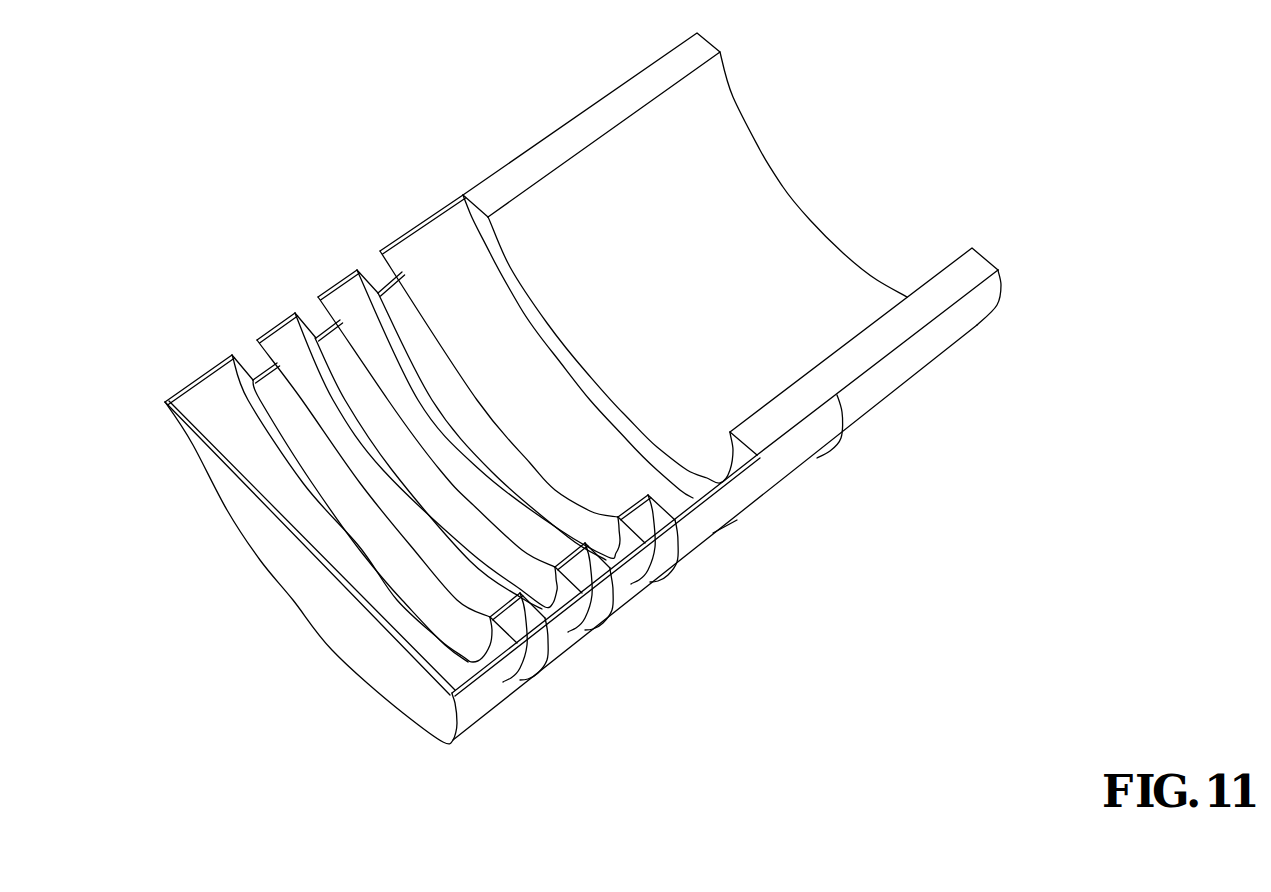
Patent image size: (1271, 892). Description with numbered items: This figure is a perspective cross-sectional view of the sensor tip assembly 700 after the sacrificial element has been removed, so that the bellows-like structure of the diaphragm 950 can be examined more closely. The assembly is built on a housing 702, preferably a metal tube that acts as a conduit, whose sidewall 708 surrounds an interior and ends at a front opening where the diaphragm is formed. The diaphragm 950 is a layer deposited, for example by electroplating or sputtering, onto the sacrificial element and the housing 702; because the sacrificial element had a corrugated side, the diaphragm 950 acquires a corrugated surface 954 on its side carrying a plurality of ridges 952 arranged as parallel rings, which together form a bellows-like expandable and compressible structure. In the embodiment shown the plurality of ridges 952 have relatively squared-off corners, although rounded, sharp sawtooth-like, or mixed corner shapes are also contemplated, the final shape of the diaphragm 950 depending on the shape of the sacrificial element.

The sensor tip assembly 700 is at (886, 676).
The housing 702 is at (585, 113).
The sidewall 708 is at (978, 270).
The diaphragm 950 is at (472, 190).
The plurality of ridges 952 is at (212, 364).
The corrugated surface 954 is at (205, 368).